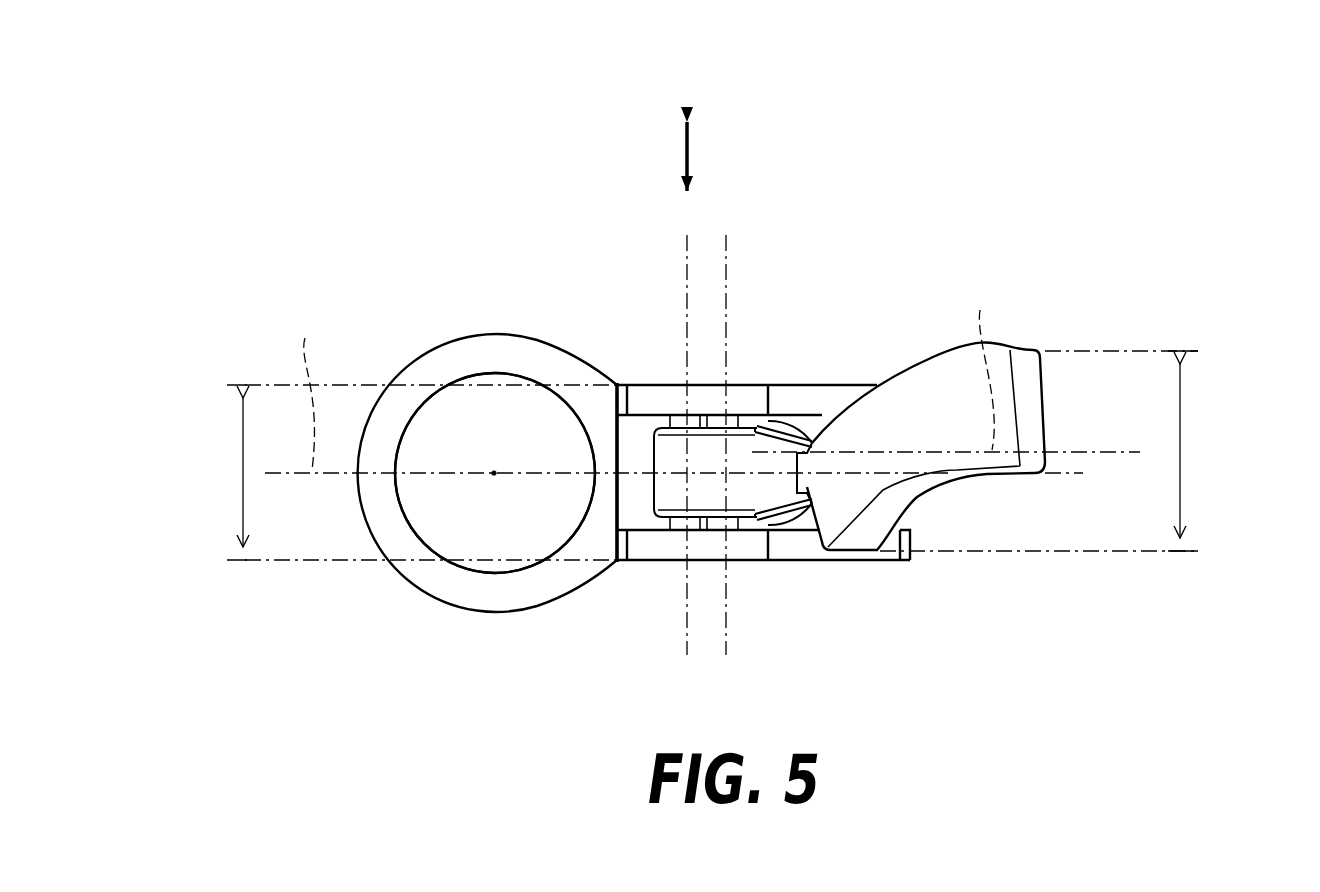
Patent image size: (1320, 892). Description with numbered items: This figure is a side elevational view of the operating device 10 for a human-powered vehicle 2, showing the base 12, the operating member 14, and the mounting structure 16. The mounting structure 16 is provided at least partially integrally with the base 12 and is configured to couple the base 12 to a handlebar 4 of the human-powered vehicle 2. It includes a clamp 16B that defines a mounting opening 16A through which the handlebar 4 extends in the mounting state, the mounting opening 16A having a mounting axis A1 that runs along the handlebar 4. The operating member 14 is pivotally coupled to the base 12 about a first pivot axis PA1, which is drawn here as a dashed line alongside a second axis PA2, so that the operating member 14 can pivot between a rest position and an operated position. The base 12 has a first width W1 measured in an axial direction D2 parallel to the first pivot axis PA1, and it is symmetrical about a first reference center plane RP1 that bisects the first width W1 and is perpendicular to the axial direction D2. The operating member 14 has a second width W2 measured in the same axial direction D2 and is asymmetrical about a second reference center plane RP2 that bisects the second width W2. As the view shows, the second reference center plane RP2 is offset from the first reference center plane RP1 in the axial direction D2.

The human-powered vehicle 2 is at (523, 140).
The handlebar 4 is at (533, 567).
The operating device 10 is at (881, 193).
The base 12 is at (786, 377).
The operating member 14 is at (927, 354).
The mounting structure 16 is at (634, 407).
The mounting opening 16A is at (578, 428).
The clamp 16B is at (448, 356).
The mounting axis A1 is at (494, 473).
The axial direction D2 is at (690, 152).
The first pivot axis PA1 is at (686, 273).
The second pivot axis PA2 is at (727, 265).
The first reference center plane RP1 is at (305, 389).
The second reference center plane RP2 is at (981, 365).
The first width W1 is at (243, 463).
The second width W2 is at (1180, 453).